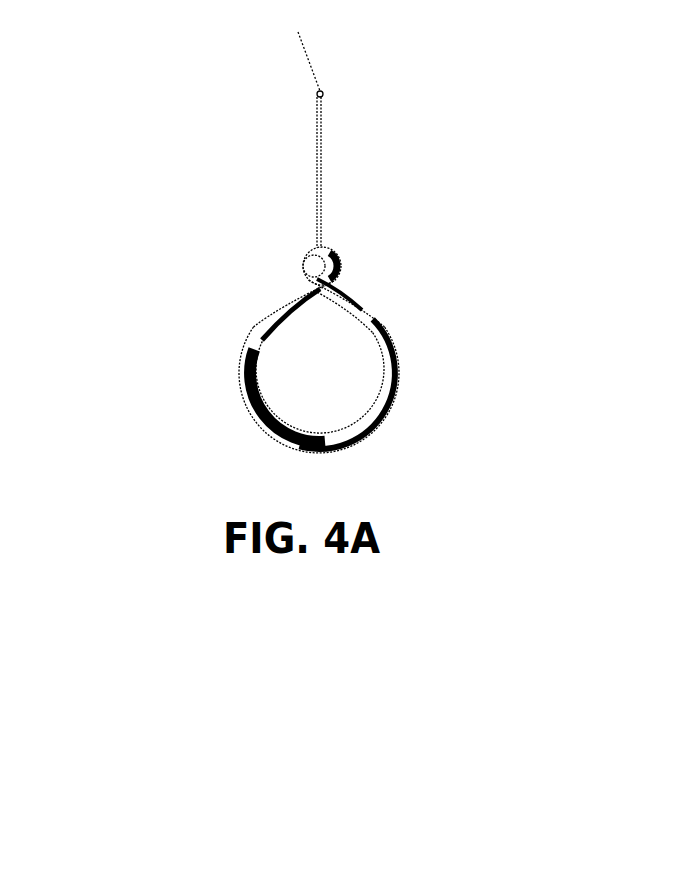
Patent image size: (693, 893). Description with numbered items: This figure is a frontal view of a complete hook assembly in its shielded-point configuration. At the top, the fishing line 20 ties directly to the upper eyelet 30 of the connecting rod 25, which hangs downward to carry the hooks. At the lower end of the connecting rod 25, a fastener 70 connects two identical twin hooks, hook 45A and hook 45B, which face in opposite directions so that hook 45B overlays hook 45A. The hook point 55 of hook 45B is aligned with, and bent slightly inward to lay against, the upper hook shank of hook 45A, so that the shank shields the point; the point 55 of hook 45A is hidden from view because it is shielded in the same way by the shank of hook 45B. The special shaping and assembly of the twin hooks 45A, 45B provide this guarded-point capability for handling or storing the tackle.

The fishing line 20 is at (292, 62).
The connecting rod 25 is at (337, 181).
The upper eyelet 30 is at (336, 95).
The hook 45A is at (232, 332).
The hook 45B is at (402, 403).
The hook point 55 is at (258, 386).
The fastener 70 is at (296, 266).